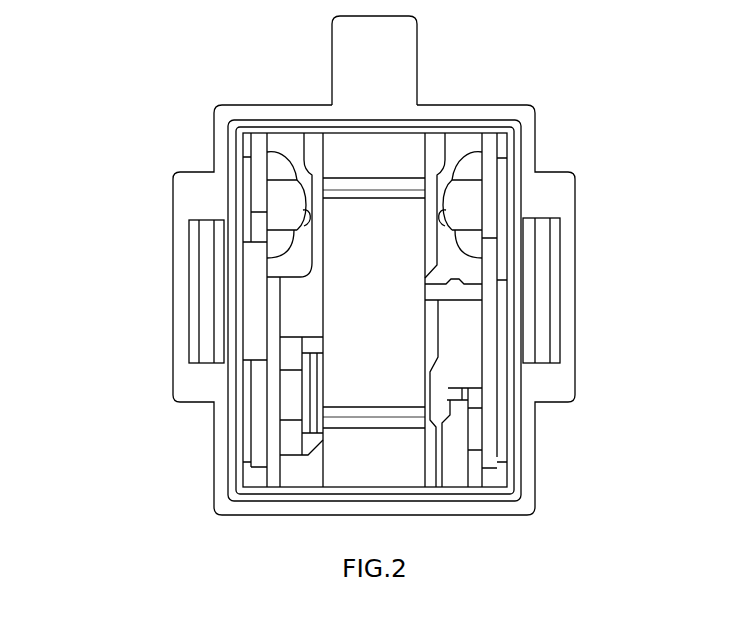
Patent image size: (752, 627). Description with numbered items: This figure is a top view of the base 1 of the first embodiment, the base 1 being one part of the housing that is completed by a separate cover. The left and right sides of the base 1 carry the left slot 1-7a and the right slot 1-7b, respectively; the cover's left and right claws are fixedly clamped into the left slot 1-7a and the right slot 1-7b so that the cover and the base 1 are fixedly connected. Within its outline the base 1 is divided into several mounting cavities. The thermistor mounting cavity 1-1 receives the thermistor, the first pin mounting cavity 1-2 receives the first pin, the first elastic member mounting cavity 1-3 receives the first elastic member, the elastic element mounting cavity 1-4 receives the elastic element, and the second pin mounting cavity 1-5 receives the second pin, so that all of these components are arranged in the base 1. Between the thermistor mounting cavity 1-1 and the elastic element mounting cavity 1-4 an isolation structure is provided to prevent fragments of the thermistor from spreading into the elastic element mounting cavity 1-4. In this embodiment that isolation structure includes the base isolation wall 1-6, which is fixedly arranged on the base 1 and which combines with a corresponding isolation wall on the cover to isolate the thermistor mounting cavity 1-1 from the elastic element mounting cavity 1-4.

The base 1 is at (203, 199).
The thermistor mounting cavity 1-1 is at (340, 300).
The first pin mounting cavity 1-2 is at (273, 195).
The first elastic member mounting cavity 1-3 is at (293, 391).
The elastic element mounting cavity 1-4 is at (453, 333).
The second pin mounting cavity 1-5 is at (463, 202).
The base isolation wall 1-6 is at (430, 355).
The left slot 1-7a is at (208, 279).
The right slot 1-7b is at (545, 282).